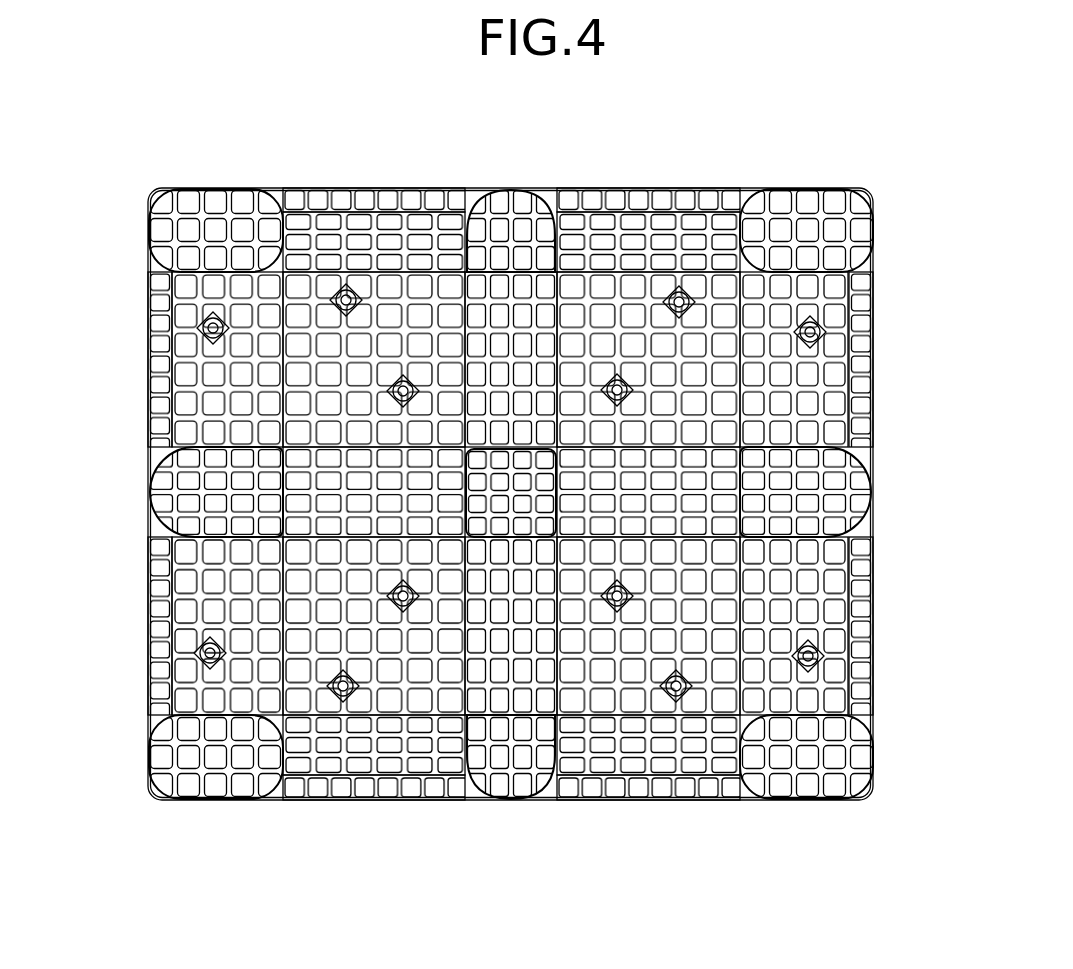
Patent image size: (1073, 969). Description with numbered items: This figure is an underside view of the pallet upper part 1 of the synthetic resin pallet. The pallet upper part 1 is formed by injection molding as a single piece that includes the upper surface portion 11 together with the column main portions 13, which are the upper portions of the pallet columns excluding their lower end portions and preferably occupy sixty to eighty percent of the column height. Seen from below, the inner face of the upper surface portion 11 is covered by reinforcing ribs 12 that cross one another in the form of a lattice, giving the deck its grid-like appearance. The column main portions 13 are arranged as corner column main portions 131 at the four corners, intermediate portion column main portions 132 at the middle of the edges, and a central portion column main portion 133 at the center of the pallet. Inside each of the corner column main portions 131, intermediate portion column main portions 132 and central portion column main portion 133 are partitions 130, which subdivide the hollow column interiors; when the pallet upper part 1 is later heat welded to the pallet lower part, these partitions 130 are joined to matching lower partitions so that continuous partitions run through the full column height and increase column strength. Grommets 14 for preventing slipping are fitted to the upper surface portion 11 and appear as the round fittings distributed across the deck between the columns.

The pallet upper part 1 is at (880, 190).
The upper surface portion 11 is at (597, 730).
The reinforcing ribs 12 is at (648, 300).
The column main portions 13 is at (529, 489).
The partitions 130 is at (240, 190).
The corner column main portions 131 is at (810, 200).
The intermediate portion column main portions 132 is at (843, 450).
The central portion column main portion 133 is at (460, 445).
The grommets 14 is at (205, 652).